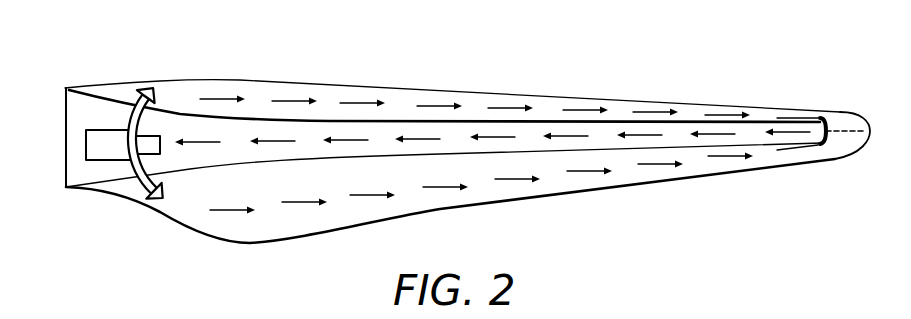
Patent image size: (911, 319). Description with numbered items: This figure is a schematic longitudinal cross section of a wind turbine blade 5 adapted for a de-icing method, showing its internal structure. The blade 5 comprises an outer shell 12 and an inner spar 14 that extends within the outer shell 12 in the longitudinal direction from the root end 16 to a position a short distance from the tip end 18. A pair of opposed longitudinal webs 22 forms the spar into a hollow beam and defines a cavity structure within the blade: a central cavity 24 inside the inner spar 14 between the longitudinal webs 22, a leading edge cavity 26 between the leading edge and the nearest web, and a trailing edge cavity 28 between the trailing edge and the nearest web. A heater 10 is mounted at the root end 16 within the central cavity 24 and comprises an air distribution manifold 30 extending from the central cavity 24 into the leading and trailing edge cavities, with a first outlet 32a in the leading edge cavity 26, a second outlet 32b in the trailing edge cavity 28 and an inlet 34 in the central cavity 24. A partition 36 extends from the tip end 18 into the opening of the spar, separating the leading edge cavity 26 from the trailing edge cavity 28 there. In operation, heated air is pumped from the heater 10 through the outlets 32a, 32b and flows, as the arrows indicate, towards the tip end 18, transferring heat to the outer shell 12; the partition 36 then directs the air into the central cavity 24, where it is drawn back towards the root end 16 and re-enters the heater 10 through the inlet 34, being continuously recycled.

The blade 5 is at (85, 67).
The heater 10 is at (94, 168).
The outer shell 12 is at (412, 91).
The inner spar 14 is at (477, 119).
The root end 16 is at (71, 147).
The tip end 18 is at (857, 117).
The longitudinal webs 22 is at (328, 120).
The central cavity 24 is at (485, 146).
The leading edge cavity 26 is at (621, 107).
The trailing edge cavity 28 is at (625, 181).
The air distribution manifold 30 is at (140, 171).
The first outlet 32a is at (167, 92).
The second outlet 32b is at (170, 198).
The inlet 34 is at (160, 153).
The partition 36 is at (848, 136).